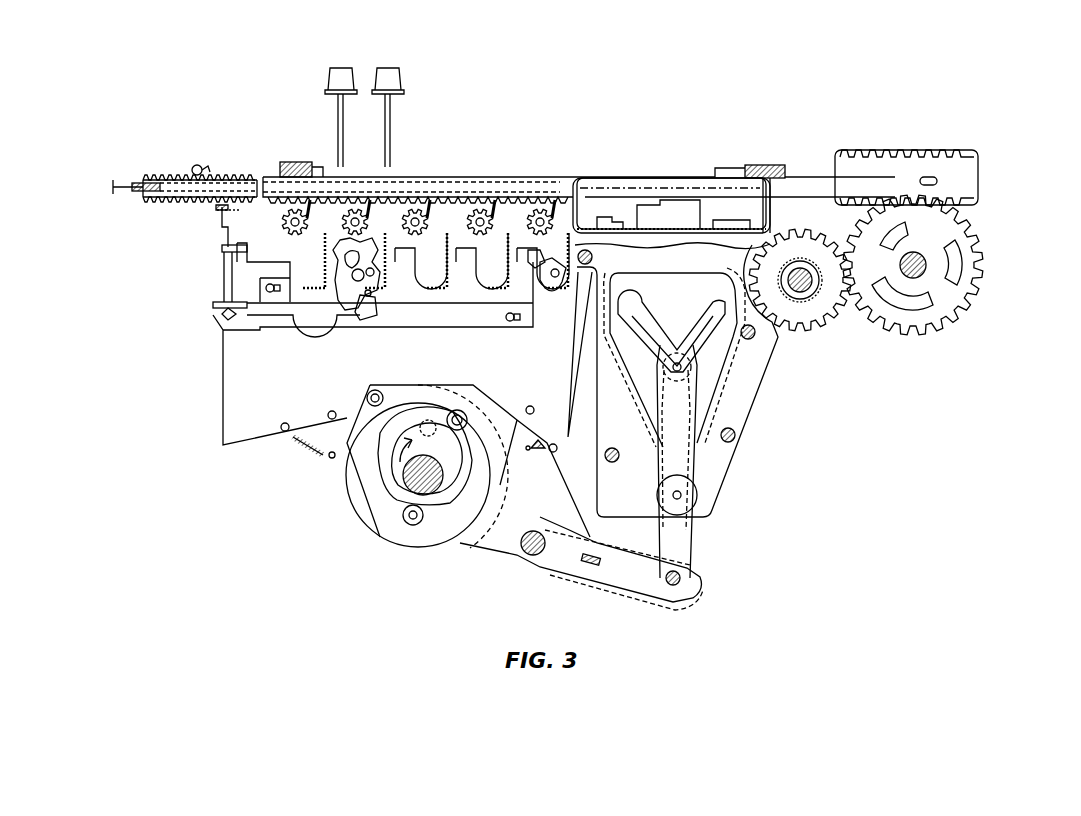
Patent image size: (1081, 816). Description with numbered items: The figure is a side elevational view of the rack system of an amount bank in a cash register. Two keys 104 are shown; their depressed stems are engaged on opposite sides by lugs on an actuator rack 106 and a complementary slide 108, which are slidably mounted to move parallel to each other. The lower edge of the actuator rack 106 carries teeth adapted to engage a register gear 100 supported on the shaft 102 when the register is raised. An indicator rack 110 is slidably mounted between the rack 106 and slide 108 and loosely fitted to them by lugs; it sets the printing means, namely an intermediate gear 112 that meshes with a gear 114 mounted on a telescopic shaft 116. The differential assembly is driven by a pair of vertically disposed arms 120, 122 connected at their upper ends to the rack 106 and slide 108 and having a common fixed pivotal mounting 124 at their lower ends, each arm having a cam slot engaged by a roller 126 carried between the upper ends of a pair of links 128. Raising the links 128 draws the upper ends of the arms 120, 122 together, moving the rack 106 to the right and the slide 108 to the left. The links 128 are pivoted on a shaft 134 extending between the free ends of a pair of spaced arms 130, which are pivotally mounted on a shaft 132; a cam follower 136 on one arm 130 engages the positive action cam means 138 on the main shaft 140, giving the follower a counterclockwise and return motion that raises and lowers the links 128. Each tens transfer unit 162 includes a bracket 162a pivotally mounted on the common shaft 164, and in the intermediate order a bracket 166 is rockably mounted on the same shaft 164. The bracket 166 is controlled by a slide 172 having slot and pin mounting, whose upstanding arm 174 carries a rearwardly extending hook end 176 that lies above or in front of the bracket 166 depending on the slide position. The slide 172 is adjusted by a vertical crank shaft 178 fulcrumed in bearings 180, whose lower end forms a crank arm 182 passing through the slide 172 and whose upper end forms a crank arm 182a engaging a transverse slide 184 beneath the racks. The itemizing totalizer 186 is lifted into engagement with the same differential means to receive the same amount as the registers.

The register gears 100 is at (580, 183).
The shaft 102 is at (541, 212).
The keys 104 is at (392, 78).
The actuator rack 106 is at (150, 178).
The complementary slide 108 is at (548, 190).
The indicator rack 110 is at (875, 157).
The intermediate gear 112 is at (930, 222).
The gear 114 is at (822, 262).
The telescopic shaft 116 is at (815, 297).
The arm 120 is at (645, 312).
The arm 122 is at (722, 260).
The pivot pin 124 is at (685, 495).
The roller 126 is at (685, 370).
The links 128 is at (673, 407).
The arms 130 is at (635, 570).
The shaft 132 is at (528, 557).
The shaft 134 is at (685, 578).
The cam follower 136 is at (490, 533).
The cam means 138 is at (395, 478).
The main shaft 140 is at (417, 490).
The tens transfer unit 162 is at (370, 296).
The bracket 162a is at (375, 273).
The shaft 164 is at (590, 240).
The bracket 166 is at (556, 276).
The slide 172 is at (262, 317).
The upstanding arm 174 is at (528, 280).
The hook end 176 is at (538, 262).
The crank shaft 178 is at (233, 267).
The bearings 180 is at (223, 255).
The crank arm 182 is at (237, 315).
The crank arm 182a is at (223, 230).
The slide 184 is at (220, 210).
The itemizing totalizer 186 is at (296, 212).